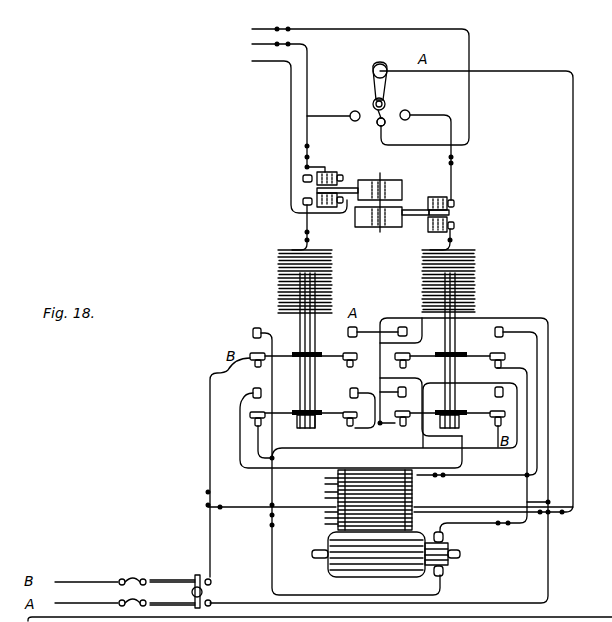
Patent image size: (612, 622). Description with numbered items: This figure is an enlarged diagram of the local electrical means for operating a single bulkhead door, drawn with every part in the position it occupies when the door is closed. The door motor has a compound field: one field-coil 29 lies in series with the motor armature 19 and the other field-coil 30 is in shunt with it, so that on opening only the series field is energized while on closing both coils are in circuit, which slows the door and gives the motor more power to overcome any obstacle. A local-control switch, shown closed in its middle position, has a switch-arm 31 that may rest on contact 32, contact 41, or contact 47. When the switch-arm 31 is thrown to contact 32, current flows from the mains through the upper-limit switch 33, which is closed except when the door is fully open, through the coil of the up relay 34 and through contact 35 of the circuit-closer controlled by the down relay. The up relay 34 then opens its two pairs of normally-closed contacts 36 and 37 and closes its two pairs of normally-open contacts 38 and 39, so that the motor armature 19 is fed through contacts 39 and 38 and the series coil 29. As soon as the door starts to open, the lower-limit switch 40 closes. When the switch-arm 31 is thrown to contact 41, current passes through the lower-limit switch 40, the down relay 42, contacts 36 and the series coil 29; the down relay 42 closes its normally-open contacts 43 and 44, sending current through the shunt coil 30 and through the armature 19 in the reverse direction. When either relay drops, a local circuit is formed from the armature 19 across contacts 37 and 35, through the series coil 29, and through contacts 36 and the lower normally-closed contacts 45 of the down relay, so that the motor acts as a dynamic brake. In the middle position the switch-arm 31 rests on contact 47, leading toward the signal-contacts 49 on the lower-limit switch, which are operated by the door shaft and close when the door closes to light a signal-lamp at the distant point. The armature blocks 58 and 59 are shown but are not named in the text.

The motor armature 19 is at (328, 539).
The series field-coil 29 is at (330, 489).
The shunt field-coil 30 is at (330, 517).
The switch-arm 31 is at (388, 90).
The up contact of local-control switch 32 is at (410, 113).
The upper-limit switch 33 is at (454, 204).
The up relay 34 is at (472, 285).
The contact of circuit-closer controlled by down relay 35 is at (254, 368).
The normally-closed contacts of up relay 36 is at (394, 420).
The normally-closed contacts of up relay 37 is at (406, 368).
The normally-open contacts of up relay 38 is at (494, 394).
The normally-open contacts of up relay 39 is at (396, 334).
The lower-limit switch 40 is at (303, 178).
The down contact of local-control switch 41 is at (351, 112).
The down relay 42 is at (280, 284).
The normally-open contacts of down relay 43 is at (253, 333).
The normally-open contacts of down relay 44 is at (250, 395).
The lower normally-closed contacts of down relay 45 is at (258, 430).
The signal contact of local-control switch 47 is at (378, 126).
The signal-contacts 49 is at (340, 172).
The armature 58 is at (396, 228).
The armature 59 is at (398, 180).